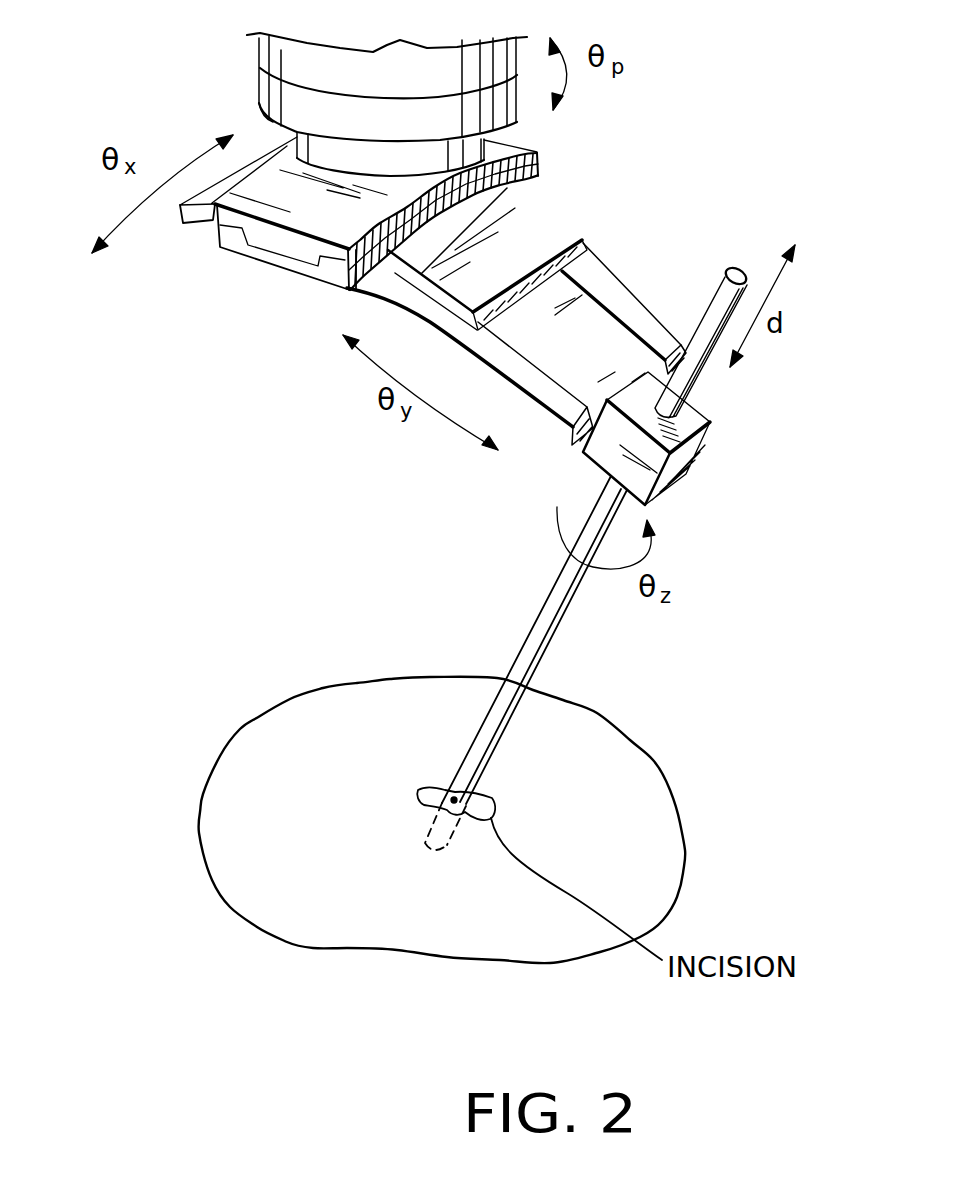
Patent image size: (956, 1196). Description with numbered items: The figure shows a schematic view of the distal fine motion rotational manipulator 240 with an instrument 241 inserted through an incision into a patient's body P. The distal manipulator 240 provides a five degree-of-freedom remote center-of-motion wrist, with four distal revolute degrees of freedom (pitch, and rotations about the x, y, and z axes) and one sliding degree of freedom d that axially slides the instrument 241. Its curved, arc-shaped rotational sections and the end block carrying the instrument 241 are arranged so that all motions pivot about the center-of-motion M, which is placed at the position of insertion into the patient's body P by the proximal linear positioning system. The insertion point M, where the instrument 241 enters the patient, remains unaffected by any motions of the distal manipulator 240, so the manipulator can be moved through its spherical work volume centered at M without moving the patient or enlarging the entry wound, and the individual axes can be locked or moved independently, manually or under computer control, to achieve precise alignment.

The remote center-of-motion distal manipulator 240 is at (553, 148).
The instrument 241 is at (540, 613).
The patient's body p is at (628, 727).
The center-of-motion M is at (468, 801).